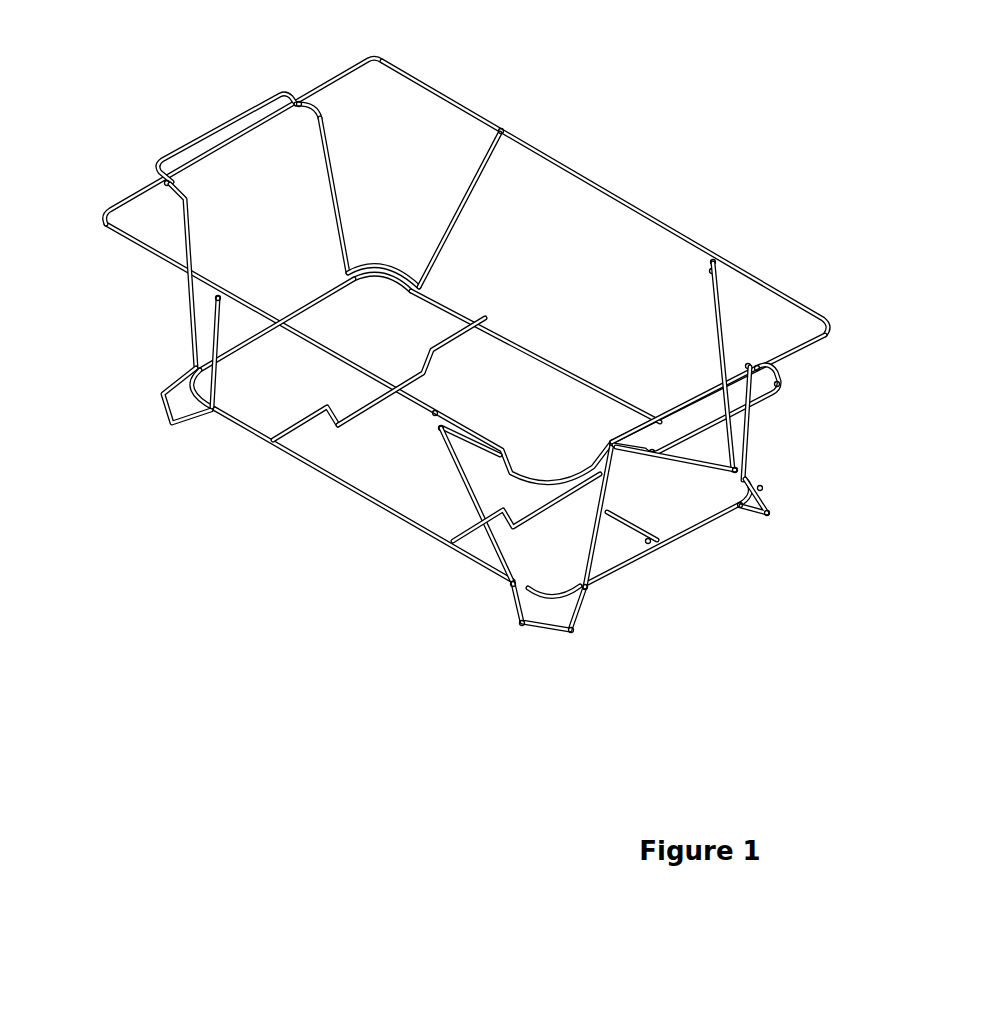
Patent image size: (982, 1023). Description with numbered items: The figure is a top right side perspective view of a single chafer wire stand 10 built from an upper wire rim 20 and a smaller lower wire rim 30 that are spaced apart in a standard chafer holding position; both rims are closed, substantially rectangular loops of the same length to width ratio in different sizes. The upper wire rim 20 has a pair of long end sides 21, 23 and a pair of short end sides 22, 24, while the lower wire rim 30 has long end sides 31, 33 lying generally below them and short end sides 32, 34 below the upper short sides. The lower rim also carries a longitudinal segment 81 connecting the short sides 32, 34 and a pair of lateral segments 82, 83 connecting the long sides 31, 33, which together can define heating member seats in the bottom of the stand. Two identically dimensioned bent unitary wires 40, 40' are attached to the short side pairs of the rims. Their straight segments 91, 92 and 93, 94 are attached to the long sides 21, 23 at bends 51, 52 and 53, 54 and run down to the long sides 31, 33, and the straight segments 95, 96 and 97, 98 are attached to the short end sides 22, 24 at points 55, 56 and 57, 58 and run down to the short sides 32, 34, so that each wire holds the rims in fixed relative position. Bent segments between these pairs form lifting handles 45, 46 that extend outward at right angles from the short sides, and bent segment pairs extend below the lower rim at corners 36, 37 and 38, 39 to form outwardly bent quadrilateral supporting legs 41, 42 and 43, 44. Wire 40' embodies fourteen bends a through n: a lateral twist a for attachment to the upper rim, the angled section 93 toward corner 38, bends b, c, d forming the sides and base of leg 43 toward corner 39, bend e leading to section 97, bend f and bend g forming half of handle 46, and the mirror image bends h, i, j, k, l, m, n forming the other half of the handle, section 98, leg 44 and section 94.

The chafer wire stand 10 is at (728, 130).
The upper wire rim 20 is at (480, 270).
The long end side 21 is at (583, 173).
The short end side 22 is at (233, 143).
The long end side 23 is at (371, 408).
The short end side 24 is at (800, 352).
The lower wire rim 30 is at (447, 431).
The long end side 31 is at (515, 338).
The short end side 32 is at (323, 290).
The long end side 33 is at (340, 484).
The short end side 34 is at (694, 532).
The lower rim corner 36 is at (383, 270).
The lower rim corner 37 is at (188, 381).
The lower rim corner 38 is at (548, 588).
The lower rim corner 39 is at (749, 481).
The bent unitary wire 40 is at (403, 163).
The bent unitary wire 40' is at (522, 570).
The supporting leg 41 is at (383, 288).
The supporting leg 42 is at (165, 410).
The supporting leg 43 is at (545, 633).
The supporting leg 44 is at (770, 505).
The handle 45 is at (186, 147).
The handle 46 is at (700, 418).
The bend 51 is at (502, 128).
The bend 52 is at (227, 295).
The bend 53 is at (437, 412).
The bend 54 is at (718, 262).
The attachment point 55 is at (298, 100).
The attachment point 56 is at (165, 182).
The attachment point 57 is at (616, 516).
The attachment point 58 is at (758, 370).
The longitudinal segment 81 is at (649, 543).
The lateral segment 82 is at (298, 430).
The lateral segment 83 is at (452, 543).
The straight segment 91 is at (452, 220).
The straight segment 92 is at (218, 372).
The angled long-end side straight wire section 93 is at (472, 490).
The long-end side straight wire section 94 is at (712, 320).
The straight wire segment 95 is at (330, 210).
The straight wire segment 96 is at (190, 306).
The angled short-end side straight wire section 97 is at (590, 558).
The short-end side straight wire section 98 is at (746, 435).
The short lateral twist a is at (440, 431).
The offset angular bend b is at (511, 586).
The lateral bend c is at (518, 628).
The upward bend d is at (573, 633).
The bend e is at (588, 589).
The lateral outward bend f is at (610, 440).
The bend g is at (652, 456).
The bend h is at (779, 386).
The bend i is at (748, 364).
The bend j is at (740, 508).
The bend k is at (769, 515).
The bend l is at (762, 488).
The bend m is at (733, 470).
The bend n is at (709, 272).